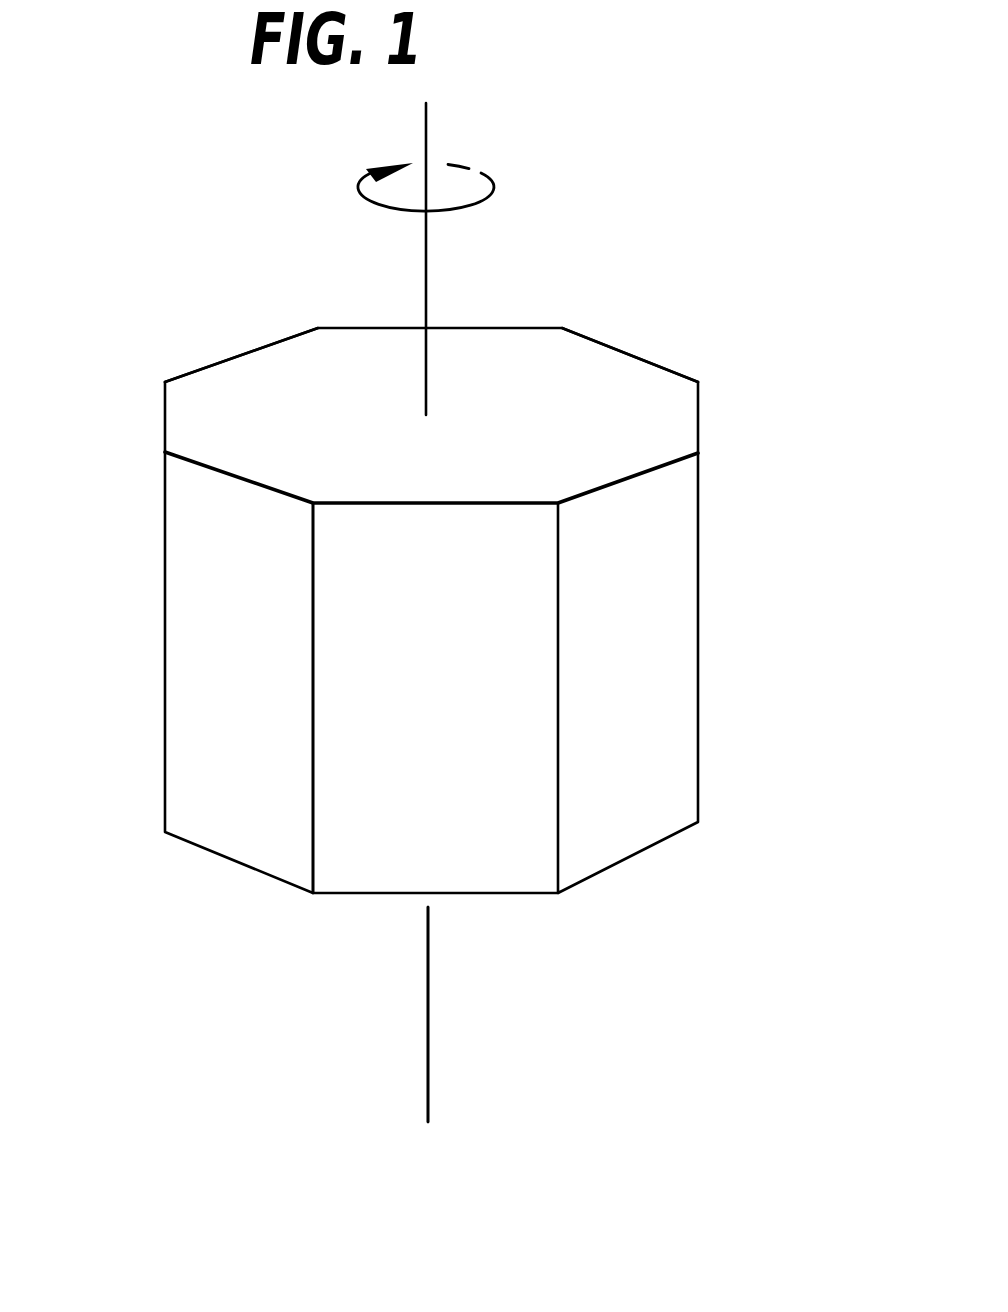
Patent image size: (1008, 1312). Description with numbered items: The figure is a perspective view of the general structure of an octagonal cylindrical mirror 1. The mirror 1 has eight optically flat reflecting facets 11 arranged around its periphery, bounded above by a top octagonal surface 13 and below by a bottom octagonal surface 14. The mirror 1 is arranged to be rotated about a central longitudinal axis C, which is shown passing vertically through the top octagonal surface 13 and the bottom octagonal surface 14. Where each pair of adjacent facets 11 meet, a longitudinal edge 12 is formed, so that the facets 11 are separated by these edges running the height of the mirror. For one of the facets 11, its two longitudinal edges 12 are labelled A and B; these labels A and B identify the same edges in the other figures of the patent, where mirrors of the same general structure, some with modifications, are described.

The octagonal cylindrical mirror 1 is at (484, 638).
The optically flat reflecting facets 11 is at (203, 722).
The longitudinal edge 12 is at (313, 808).
The top octagonal surface 13 is at (573, 418).
The bottom octagonal surface 14 is at (515, 897).
The longitudinal edge label A is at (318, 328).
The longitudinal edge label B is at (562, 328).
The central longitudinal axis C is at (428, 1055).